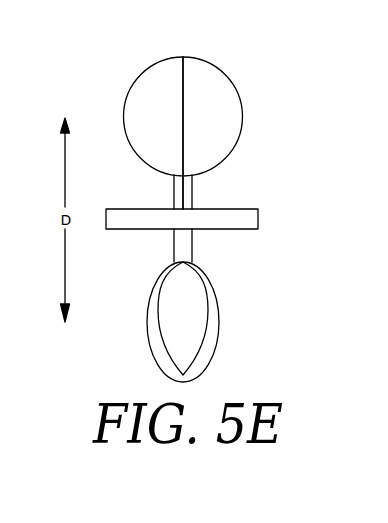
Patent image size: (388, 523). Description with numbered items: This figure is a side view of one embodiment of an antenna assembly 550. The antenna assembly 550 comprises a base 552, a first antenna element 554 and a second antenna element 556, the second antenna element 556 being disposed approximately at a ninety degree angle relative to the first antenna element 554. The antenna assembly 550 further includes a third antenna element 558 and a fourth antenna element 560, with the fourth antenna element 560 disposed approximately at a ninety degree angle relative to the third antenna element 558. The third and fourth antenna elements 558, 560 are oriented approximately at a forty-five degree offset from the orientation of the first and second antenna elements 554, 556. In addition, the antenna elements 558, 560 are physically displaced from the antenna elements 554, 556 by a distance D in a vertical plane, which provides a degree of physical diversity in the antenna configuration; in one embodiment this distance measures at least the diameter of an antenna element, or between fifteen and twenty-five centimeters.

The antenna assembly 550 is at (286, 86).
The base 552 is at (258, 214).
The first antenna element 554 is at (140, 77).
The second antenna element 556 is at (183, 60).
The third antenna element 558 is at (155, 287).
The fourth antenna element 560 is at (208, 288).